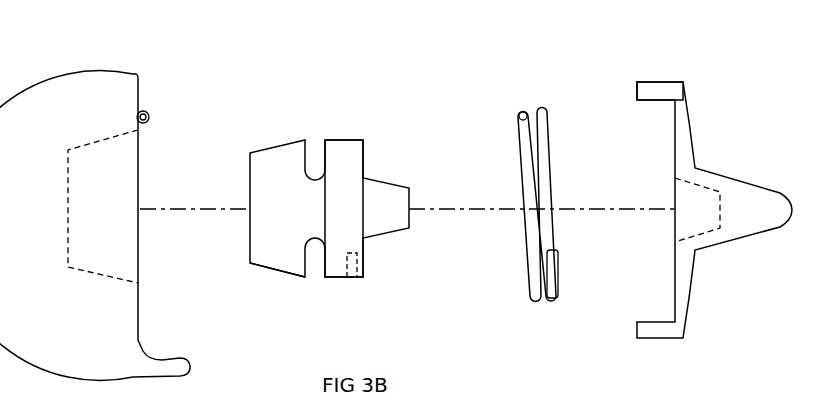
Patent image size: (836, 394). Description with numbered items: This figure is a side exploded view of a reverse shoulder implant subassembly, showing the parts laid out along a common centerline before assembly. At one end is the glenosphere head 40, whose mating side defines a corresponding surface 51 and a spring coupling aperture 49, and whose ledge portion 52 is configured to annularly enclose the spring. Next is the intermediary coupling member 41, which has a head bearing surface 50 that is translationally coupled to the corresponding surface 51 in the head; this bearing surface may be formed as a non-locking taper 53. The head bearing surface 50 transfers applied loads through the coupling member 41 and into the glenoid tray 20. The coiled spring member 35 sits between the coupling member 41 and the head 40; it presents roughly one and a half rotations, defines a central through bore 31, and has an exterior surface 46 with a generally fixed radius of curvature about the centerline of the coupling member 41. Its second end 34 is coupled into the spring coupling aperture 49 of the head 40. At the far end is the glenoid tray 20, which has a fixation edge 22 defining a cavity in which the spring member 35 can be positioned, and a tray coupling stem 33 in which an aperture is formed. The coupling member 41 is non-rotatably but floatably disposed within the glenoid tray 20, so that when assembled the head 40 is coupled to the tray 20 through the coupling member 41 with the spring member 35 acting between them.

The glenoid tray 20 is at (684, 138).
The fixation edge 22 is at (655, 88).
The central through bore 31 is at (562, 185).
The tray coupling stem 33 is at (742, 223).
The second end 34 is at (519, 112).
The spring member 35 is at (555, 285).
The glenosphere head 40 is at (82, 342).
The intermediary coupling member 41 is at (334, 268).
The exterior surface 46 is at (353, 158).
The spring coupling aperture 49 is at (149, 113).
The head bearing surface 50 is at (272, 172).
The corresponding surface 51 is at (113, 278).
The ledge portion 52 is at (139, 77).
The non-locking taper 53 is at (278, 272).